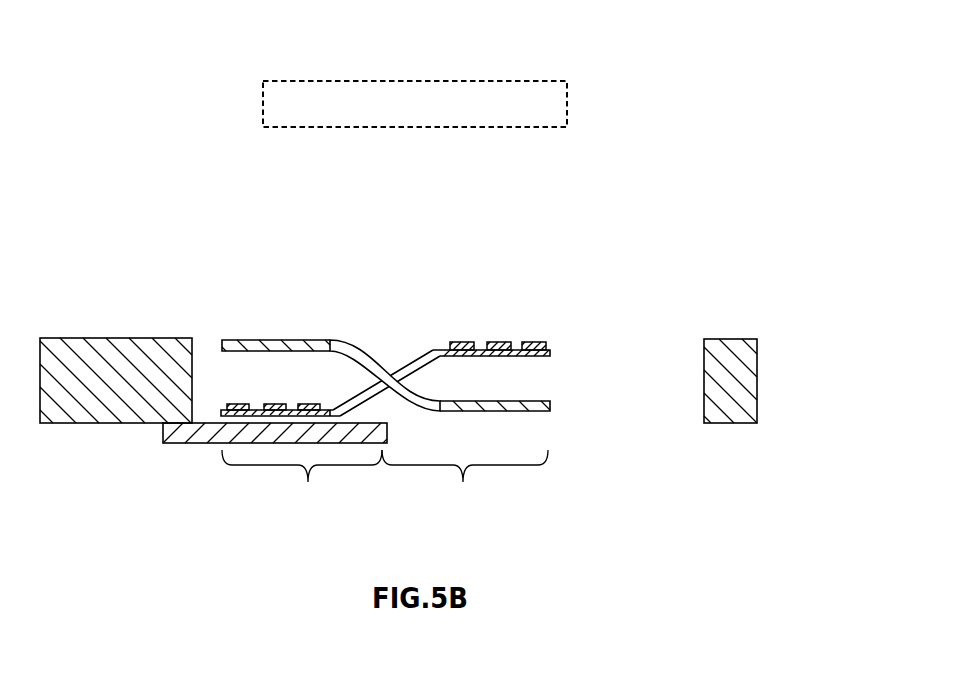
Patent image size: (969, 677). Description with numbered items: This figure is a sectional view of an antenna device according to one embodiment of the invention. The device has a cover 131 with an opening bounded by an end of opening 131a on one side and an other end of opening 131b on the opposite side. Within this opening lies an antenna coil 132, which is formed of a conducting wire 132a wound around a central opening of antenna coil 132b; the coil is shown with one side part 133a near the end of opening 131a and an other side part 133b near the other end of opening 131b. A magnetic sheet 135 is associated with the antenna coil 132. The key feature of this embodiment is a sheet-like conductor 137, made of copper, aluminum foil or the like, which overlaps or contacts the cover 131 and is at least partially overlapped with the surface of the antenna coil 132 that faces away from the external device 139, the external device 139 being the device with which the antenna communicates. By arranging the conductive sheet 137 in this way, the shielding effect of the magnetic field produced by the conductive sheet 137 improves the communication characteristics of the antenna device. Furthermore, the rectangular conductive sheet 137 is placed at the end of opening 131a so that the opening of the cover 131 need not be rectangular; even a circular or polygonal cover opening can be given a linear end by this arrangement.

The cover 131 is at (53, 342).
The end of opening 131a is at (202, 348).
The other end of opening 131b is at (704, 372).
The antenna coil 132 is at (551, 369).
The conducting wire 132a is at (527, 343).
The opening of antenna coil 132b is at (402, 367).
The one side part 133a is at (302, 479).
The other side part 133b is at (465, 479).
The magnetic sheet 135 is at (275, 345).
The conductor (conductive sheet) 137 is at (205, 435).
The external device 139 is at (555, 95).